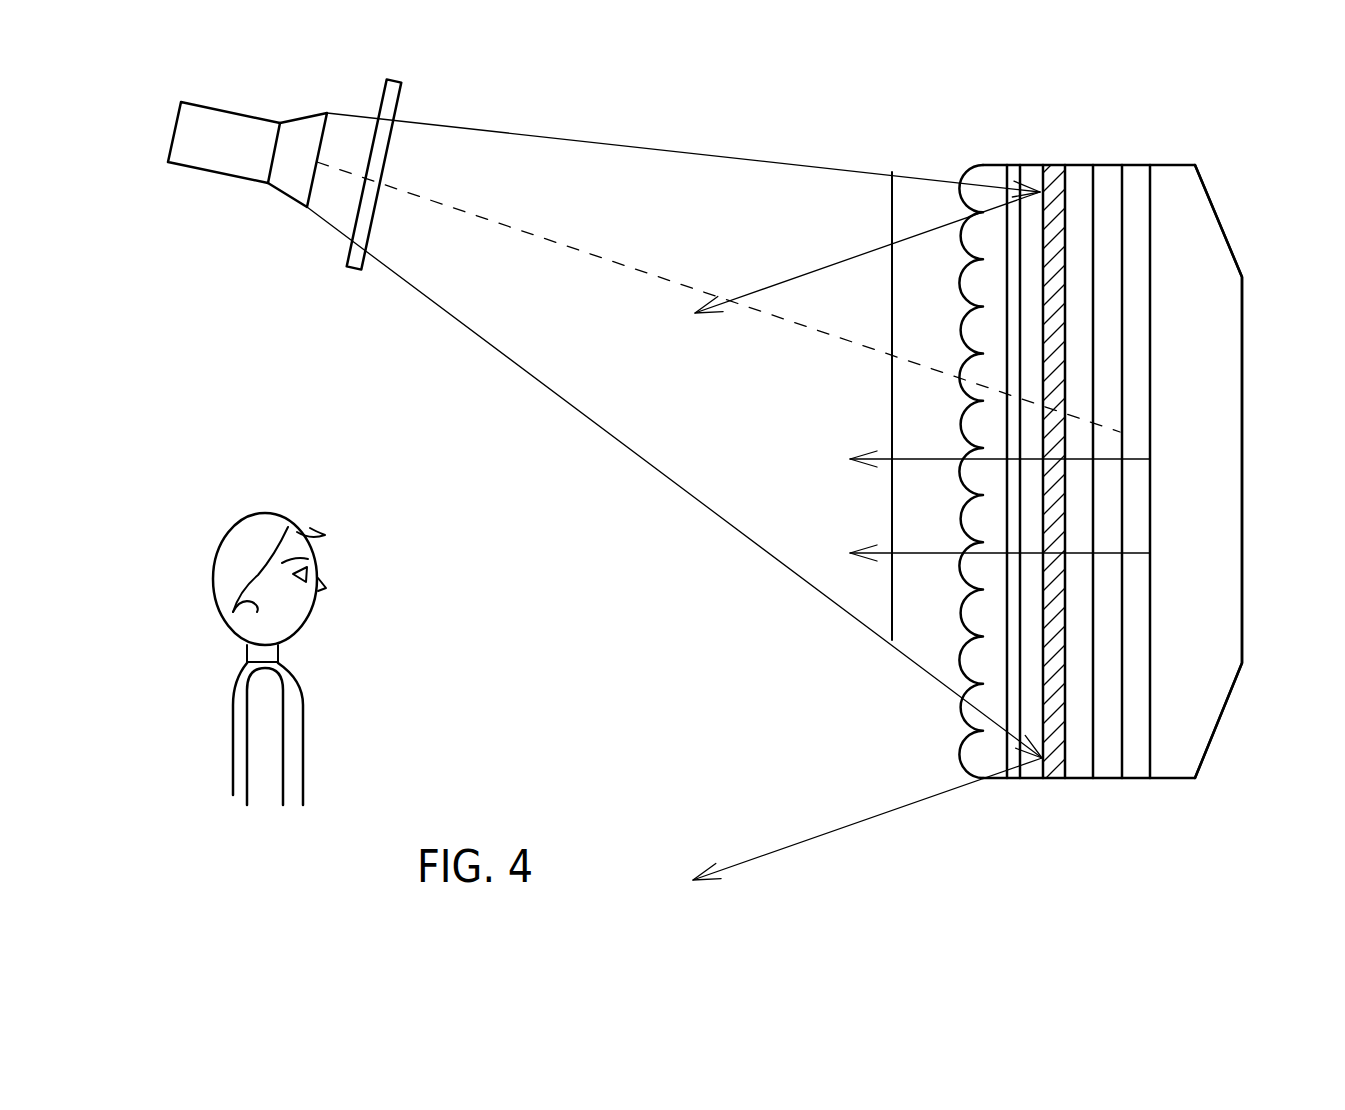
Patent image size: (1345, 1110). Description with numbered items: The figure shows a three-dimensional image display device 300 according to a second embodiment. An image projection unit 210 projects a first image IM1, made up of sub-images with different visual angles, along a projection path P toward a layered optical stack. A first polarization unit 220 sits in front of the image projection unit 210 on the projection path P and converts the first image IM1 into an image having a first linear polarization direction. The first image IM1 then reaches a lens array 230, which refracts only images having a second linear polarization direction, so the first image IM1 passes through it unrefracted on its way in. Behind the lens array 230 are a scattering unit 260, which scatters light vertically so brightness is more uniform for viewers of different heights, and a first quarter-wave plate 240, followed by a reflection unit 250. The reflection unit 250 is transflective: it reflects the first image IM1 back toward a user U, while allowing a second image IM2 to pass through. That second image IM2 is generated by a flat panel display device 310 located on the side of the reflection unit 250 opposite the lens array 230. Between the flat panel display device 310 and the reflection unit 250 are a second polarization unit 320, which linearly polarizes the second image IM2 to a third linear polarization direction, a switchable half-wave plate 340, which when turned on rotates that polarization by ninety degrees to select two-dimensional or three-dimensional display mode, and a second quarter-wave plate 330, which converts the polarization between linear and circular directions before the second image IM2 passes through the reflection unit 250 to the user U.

The image projection unit 210 is at (200, 105).
The first polarization unit 220 is at (395, 80).
The lens array 230 is at (983, 175).
The first quarter-wave plate 240 is at (1031, 175).
The reflection unit 250 is at (1055, 175).
The scattering unit 260 is at (1014, 175).
The 3D image display device 300 is at (1218, 108).
The flat panel display device 310 is at (1166, 175).
The second polarization unit 320 is at (1138, 175).
The second quarter-wave plate 330 is at (1083, 175).
The switchable half-wave plate 340 is at (1110, 175).
The first image IM1 is at (892, 172).
The second image IM2 is at (1153, 400).
The projection path P is at (540, 193).
The user U is at (232, 541).